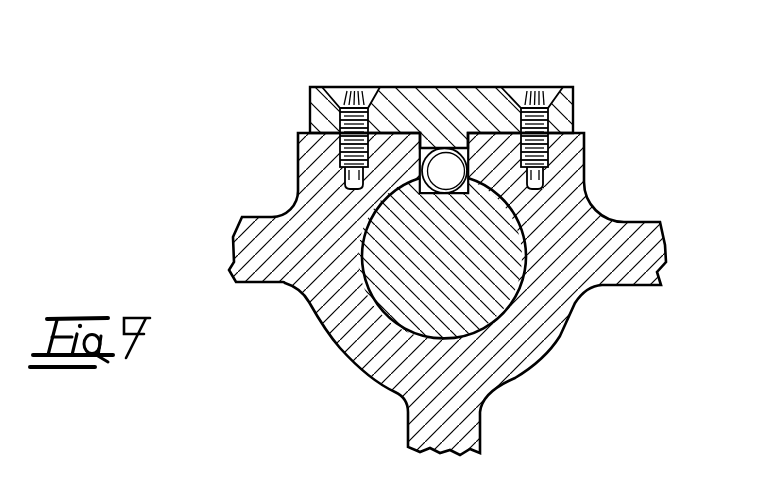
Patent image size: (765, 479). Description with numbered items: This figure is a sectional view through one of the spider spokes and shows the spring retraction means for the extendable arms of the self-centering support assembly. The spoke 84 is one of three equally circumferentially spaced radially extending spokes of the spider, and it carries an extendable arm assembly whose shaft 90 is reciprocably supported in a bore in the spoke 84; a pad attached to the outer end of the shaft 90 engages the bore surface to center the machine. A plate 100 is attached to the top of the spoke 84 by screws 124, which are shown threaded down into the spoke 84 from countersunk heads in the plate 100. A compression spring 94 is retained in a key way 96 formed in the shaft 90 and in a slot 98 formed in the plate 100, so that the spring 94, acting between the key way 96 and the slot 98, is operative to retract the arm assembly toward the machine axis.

The spoke 84 is at (308, 158).
The shaft 90 is at (505, 285).
The compression spring 94 is at (453, 147).
The key way 96 is at (450, 198).
The slot 98 is at (427, 147).
The plate 100 is at (433, 96).
The screws 124 is at (360, 100).